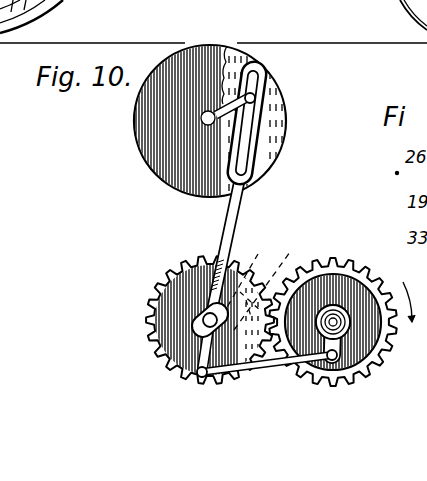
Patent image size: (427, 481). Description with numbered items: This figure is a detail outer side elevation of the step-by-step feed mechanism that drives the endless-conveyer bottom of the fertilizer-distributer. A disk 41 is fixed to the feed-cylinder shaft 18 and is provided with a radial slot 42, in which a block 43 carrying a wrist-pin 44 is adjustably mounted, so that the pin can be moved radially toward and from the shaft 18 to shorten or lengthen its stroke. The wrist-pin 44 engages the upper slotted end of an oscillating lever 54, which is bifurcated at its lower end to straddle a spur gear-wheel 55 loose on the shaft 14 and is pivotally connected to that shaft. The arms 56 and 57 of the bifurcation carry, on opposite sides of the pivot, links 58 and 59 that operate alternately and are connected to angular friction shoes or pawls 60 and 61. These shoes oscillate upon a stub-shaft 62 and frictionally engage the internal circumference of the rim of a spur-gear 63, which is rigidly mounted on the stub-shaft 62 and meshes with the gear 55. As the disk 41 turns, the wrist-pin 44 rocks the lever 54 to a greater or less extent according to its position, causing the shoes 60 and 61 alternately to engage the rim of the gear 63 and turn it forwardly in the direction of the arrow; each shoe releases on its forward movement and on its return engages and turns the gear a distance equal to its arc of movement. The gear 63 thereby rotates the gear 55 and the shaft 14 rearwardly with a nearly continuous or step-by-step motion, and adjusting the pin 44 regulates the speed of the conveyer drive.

The shaft 14 is at (200, 321).
The shaft 18 is at (204, 122).
The disk 41 is at (163, 133).
The radial slot 42 is at (227, 46).
The block 43 is at (238, 96).
The wrist-pin 44 is at (255, 98).
The oscillating lever 54 is at (232, 213).
The spur gear-wheel 55 is at (180, 297).
The arm of the bifurcation 56 is at (248, 267).
The arm of the bifurcation 57 is at (206, 346).
The link 58 is at (240, 373).
The link 59 is at (288, 258).
The friction shoe or pawl 60 is at (327, 361).
The friction shoe or pawl 61 is at (372, 370).
The stub-shaft 62 is at (346, 310).
The spur-gear 63 is at (345, 275).